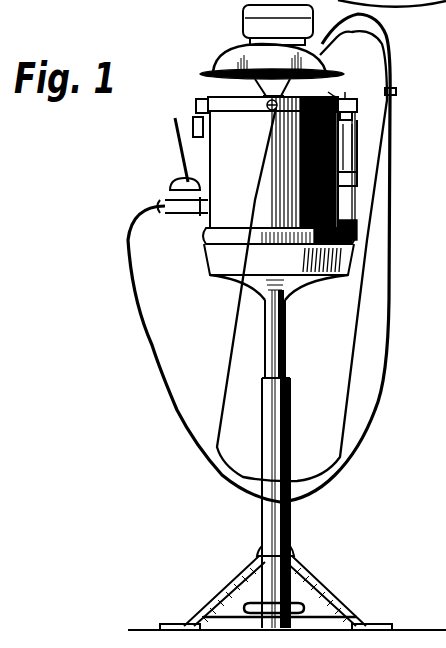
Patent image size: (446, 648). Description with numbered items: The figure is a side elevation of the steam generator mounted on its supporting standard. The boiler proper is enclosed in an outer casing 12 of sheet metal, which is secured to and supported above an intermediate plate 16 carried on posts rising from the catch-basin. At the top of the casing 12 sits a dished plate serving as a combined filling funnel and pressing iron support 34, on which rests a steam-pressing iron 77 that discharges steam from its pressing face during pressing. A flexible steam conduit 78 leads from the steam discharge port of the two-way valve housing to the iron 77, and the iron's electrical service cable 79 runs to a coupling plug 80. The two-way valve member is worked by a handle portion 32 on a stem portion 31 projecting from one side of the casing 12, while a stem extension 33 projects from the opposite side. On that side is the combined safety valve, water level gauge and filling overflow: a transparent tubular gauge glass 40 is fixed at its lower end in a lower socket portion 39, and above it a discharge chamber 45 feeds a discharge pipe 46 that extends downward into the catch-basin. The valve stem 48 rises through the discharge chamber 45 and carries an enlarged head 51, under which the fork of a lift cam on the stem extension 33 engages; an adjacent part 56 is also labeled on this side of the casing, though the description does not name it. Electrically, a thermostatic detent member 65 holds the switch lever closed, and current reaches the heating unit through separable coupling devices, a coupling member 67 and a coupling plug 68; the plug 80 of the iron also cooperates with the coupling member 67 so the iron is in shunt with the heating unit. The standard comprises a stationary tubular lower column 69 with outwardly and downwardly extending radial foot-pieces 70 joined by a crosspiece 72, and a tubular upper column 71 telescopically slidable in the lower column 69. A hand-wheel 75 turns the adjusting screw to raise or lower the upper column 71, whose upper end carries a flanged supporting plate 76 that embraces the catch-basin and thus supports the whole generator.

The outer casing 12 is at (273, 162).
The intermediate plate 16 is at (206, 236).
The stem portion 31 is at (199, 100).
The handle portion 32 is at (181, 110).
The stem extension 33 is at (351, 87).
The combined filling funnel and pressing iron support 34 is at (344, 73).
The lower socket portion 39 is at (345, 190).
The transparent tubular gauge glass 40 is at (352, 144).
The discharge chamber 45 is at (352, 113).
The discharge pipe 46 is at (350, 198).
The valve stem 48 is at (392, 90).
The head 51 is at (332, 87).
The gauge 56 is at (357, 127).
The thermostatic detent member 65 is at (357, 103).
The coupling member 67 is at (196, 212).
The coupling plug 68 is at (176, 186).
The lower column 69 is at (289, 432).
The foot-pieces 70 is at (232, 579).
The upper column 71 is at (286, 352).
The crosspiece 72 is at (340, 612).
The hand-wheel 75 is at (247, 605).
The flanged supporting plate 76 is at (208, 258).
The steam-pressing iron 77 is at (236, 58).
The flexible steam conduit 78 is at (220, 352).
The electrical service cable 79 is at (392, 26).
The coupling plug 80 is at (162, 215).